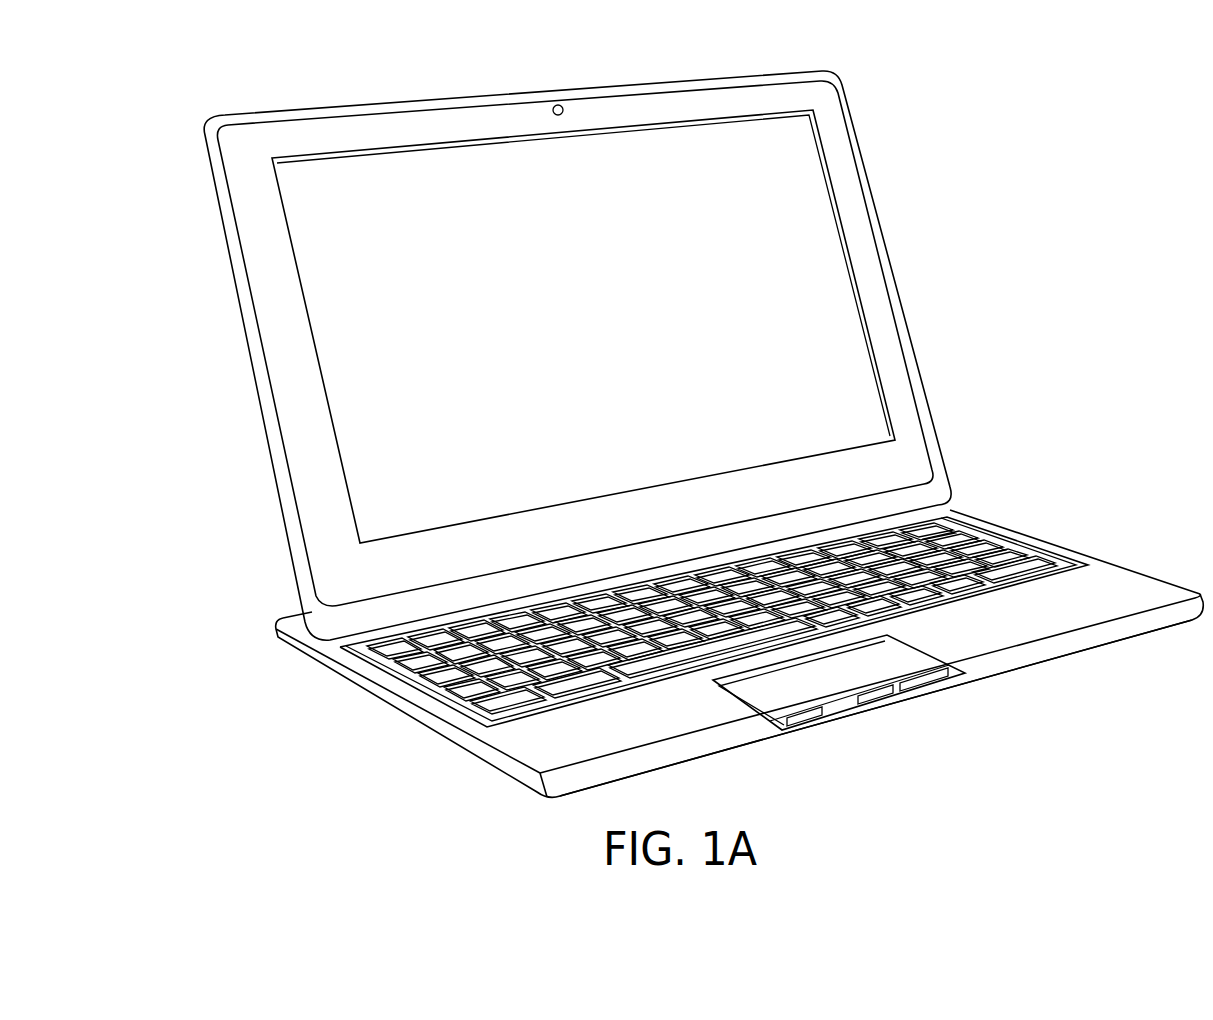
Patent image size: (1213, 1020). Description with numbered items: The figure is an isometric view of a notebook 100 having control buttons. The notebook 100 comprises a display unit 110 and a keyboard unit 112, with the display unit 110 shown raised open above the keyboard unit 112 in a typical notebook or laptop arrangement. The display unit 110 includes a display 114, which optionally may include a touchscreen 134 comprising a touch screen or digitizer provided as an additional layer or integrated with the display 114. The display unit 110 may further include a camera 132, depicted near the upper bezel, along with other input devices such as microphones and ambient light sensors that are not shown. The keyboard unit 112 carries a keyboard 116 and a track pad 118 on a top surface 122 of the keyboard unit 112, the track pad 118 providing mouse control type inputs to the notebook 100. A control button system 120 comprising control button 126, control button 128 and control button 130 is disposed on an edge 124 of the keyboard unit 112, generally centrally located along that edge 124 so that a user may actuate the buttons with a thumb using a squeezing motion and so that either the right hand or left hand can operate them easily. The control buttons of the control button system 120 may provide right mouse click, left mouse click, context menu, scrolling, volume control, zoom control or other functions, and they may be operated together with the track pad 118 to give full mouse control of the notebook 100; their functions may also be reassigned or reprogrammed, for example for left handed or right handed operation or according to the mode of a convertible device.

The notebook 100 is at (1101, 167).
The display unit 110 is at (857, 127).
The keyboard unit 112 is at (1075, 548).
The display 114 is at (728, 216).
The keyboard 116 is at (1016, 532).
The track pad 118 is at (725, 692).
The control button system 120 is at (986, 690).
The top surface 122 is at (1147, 593).
The edge 124 is at (645, 762).
The control button 126 is at (812, 723).
The control button 128 is at (875, 705).
The control button 130 is at (921, 695).
The camera 132 is at (563, 107).
The touchscreen 134 is at (823, 303).